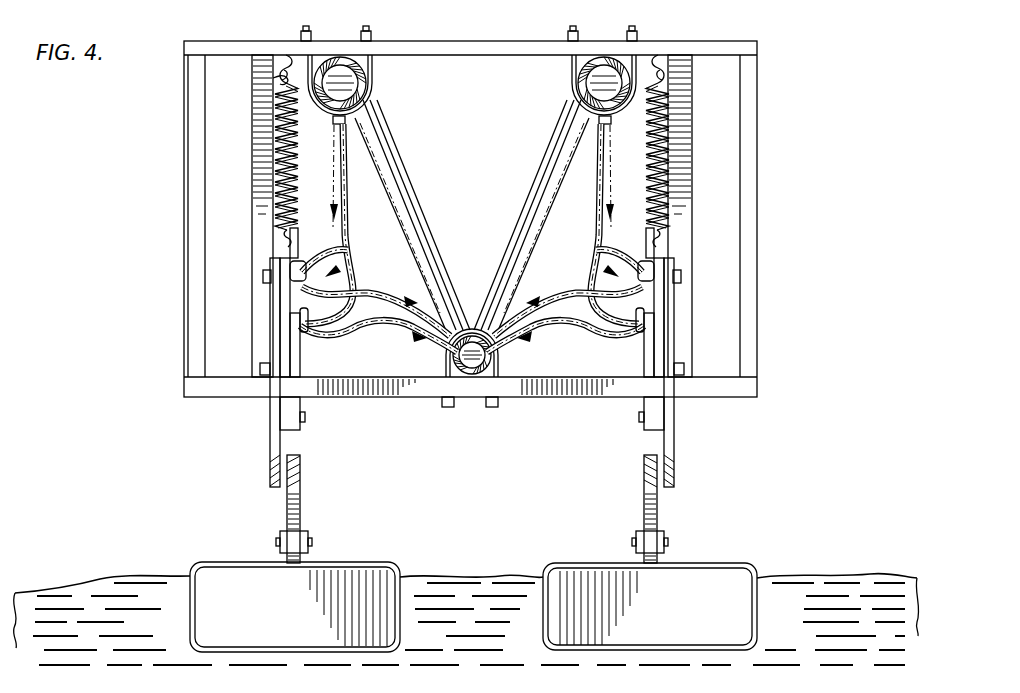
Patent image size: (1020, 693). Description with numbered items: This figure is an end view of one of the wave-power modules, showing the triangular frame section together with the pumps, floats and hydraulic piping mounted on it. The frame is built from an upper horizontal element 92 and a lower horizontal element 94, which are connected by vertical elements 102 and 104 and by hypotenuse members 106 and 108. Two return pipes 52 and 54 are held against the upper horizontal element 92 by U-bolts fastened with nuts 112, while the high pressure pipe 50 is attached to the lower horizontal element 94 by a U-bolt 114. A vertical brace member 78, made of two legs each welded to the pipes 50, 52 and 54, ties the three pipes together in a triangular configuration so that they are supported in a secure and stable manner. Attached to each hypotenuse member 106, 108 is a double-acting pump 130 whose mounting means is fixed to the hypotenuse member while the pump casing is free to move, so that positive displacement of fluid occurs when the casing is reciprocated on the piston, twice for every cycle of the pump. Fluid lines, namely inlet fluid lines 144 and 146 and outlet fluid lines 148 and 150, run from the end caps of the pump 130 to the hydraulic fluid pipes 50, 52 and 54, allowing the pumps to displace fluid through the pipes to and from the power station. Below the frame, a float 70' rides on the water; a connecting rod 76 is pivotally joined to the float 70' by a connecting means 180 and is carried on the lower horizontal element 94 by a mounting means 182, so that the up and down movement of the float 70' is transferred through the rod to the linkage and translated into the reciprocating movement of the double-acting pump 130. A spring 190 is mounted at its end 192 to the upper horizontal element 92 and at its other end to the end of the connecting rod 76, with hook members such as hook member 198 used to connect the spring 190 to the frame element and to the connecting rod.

The high pressure pipe 50 is at (483, 372).
The return pipe 52 is at (358, 86).
The return pipe 54 is at (586, 88).
The float 70' is at (485, 586).
The connecting rod 76 is at (269, 470).
The vertical brace member 78 is at (506, 209).
The horizontal element 92 is at (483, 56).
The horizontal element 94 is at (411, 397).
The vertical element 102 is at (189, 351).
The vertical element 104 is at (758, 226).
The hypotenuse member 106 is at (254, 214).
The hypotenuse member 108 is at (691, 192).
The nuts 112 is at (300, 34).
The U-bolt 114 is at (494, 368).
The double-acting pump 130 is at (300, 303).
The inlet fluid line 144 is at (352, 276).
The inlet fluid line 146 is at (320, 262).
The outlet fluid line 148 is at (347, 334).
The outlet fluid line 150 is at (497, 300).
The connecting means 180 is at (312, 539).
The mounting means 182 is at (260, 366).
The spring 190 is at (284, 152).
The end of spring 192 is at (283, 86).
The hook member 198 is at (276, 82).